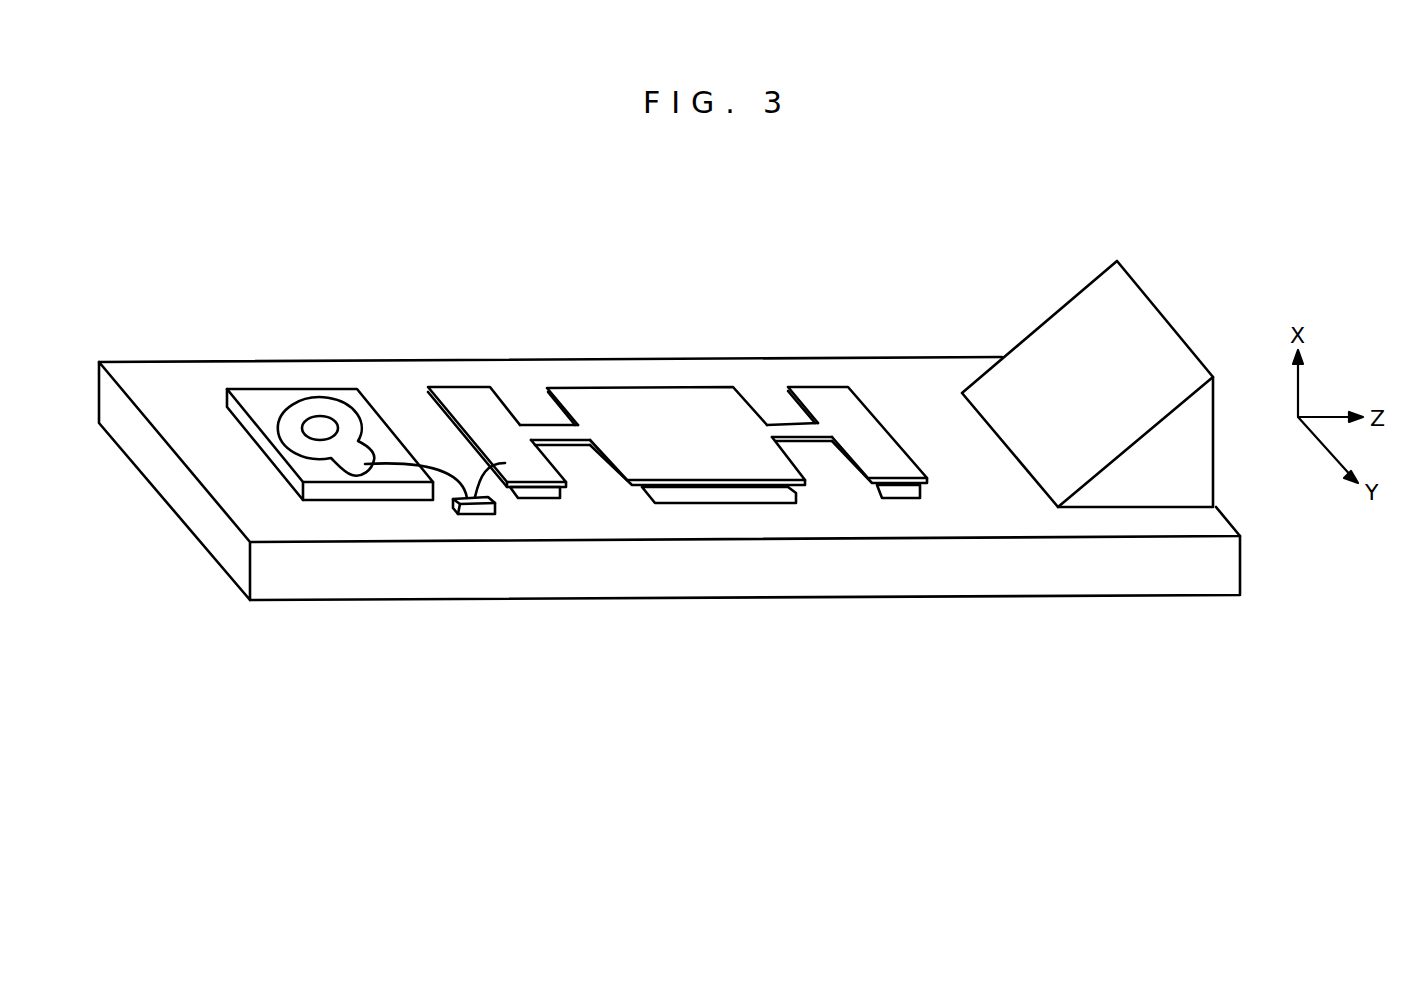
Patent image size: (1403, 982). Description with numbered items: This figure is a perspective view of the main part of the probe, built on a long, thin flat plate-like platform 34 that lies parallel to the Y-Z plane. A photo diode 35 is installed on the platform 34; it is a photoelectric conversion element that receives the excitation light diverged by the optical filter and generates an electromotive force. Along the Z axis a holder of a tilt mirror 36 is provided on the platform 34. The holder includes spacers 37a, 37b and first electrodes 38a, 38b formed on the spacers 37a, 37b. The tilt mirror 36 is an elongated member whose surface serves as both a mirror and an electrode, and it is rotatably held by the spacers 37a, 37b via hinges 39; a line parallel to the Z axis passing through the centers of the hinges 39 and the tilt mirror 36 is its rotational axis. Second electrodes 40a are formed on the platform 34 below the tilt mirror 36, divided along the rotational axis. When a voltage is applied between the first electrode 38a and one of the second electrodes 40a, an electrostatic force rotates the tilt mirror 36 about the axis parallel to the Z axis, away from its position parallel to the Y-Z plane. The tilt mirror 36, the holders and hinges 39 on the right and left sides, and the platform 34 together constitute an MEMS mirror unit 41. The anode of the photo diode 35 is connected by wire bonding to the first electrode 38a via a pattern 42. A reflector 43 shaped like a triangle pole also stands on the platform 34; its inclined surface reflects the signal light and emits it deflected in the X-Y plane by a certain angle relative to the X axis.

The platform 34 is at (292, 583).
The photo diode 35 is at (264, 397).
The tilt mirror 36 is at (620, 402).
The spacer 37a is at (532, 493).
The spacer 37b is at (893, 492).
The first electrode 38a is at (458, 397).
The first electrode 38b is at (857, 390).
The hinge 39 is at (535, 432).
The second electrode 40a is at (710, 492).
The MEMS mirror unit 41 is at (663, 361).
The pattern 42 is at (457, 517).
The reflector 43 is at (1057, 327).